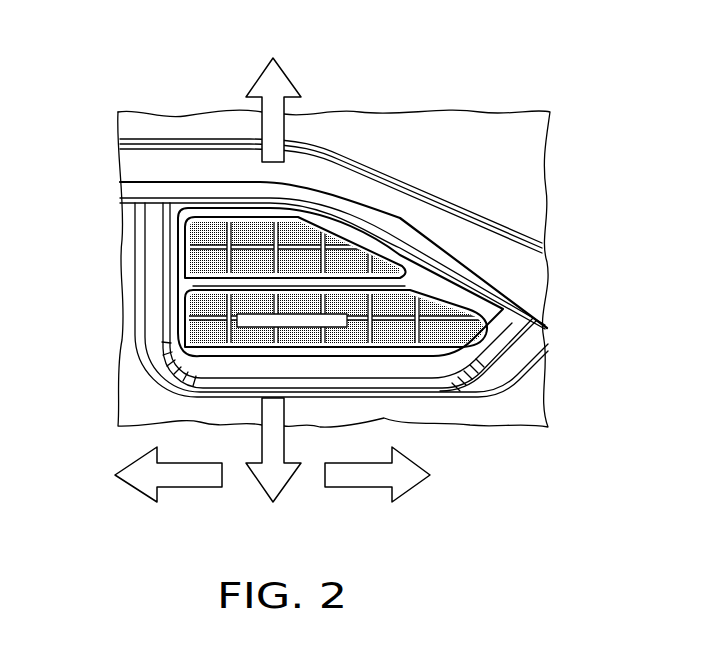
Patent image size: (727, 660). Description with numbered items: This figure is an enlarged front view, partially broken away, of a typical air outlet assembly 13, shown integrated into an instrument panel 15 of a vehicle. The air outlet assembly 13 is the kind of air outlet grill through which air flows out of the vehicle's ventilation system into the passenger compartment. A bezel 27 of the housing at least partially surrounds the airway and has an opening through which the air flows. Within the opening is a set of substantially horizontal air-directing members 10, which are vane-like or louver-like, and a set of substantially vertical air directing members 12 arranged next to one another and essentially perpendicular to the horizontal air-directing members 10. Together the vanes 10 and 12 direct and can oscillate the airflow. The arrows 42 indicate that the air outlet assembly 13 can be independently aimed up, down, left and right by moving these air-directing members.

The air-directing member 10 is at (210, 258).
The vertical air directing member 12 is at (230, 237).
The air outlet assembly 13 is at (489, 362).
The instrument panel 15 is at (497, 195).
The bezel 27 is at (134, 247).
The arrows 42 is at (288, 132).